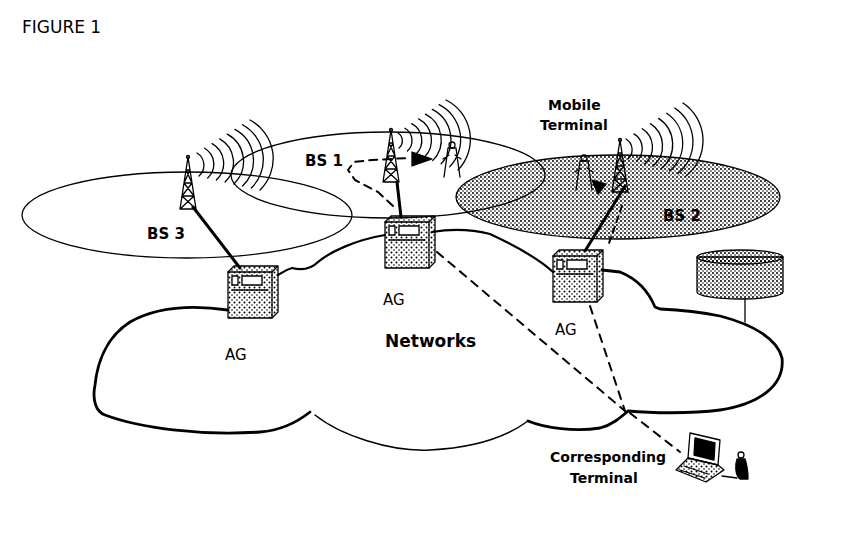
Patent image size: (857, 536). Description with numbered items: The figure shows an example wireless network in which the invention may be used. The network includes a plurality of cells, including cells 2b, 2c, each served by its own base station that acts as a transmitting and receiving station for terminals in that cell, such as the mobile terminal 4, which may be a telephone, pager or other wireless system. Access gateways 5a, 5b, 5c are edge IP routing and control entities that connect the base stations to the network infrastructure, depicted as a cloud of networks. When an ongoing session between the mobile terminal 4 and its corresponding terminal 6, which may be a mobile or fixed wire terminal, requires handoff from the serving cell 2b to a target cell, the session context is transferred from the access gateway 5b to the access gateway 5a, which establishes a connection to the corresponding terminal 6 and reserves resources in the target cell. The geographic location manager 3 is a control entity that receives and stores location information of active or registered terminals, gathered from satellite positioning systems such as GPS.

The cell 2c is at (79, 182).
The cell 2b is at (736, 164).
The geographic location manager (GLM) 3 is at (784, 276).
The mobile terminal 4 is at (447, 179).
The access gateway 5a is at (397, 284).
The access gateway 5b is at (561, 318).
The access gateway 5c is at (241, 334).
The corresponding terminal 6 is at (706, 470).